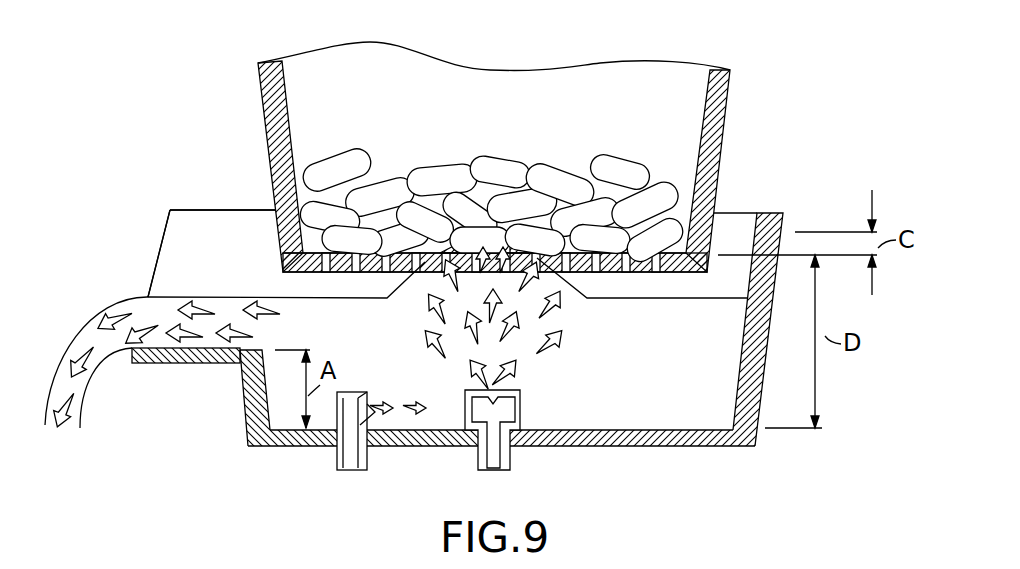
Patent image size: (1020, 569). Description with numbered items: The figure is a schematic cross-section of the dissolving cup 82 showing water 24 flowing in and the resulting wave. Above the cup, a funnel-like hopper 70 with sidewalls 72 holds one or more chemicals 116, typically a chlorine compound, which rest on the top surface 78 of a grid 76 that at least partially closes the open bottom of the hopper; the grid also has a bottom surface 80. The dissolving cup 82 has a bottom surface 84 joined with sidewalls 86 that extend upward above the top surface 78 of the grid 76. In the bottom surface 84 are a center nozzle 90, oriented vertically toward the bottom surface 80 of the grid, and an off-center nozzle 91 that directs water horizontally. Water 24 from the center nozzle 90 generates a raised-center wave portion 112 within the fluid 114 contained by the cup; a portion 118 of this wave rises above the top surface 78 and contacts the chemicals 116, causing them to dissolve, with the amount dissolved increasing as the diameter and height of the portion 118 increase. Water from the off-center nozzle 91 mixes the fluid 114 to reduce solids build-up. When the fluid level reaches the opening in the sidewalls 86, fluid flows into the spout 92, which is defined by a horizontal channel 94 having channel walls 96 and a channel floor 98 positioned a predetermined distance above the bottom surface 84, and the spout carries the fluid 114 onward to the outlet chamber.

The water 24 is at (447, 380).
The hopper 70 is at (630, 73).
The sidewalls 72 is at (287, 93).
The grid 76 is at (700, 178).
The top surface 78 is at (372, 253).
The bottom surface 80 is at (345, 273).
The dissolving cup 82 is at (259, 447).
The bottom surface 84 is at (618, 433).
The sidewalls 86 is at (288, 432).
The center nozzle 90 is at (522, 413).
The off-center nozzle 91 is at (352, 392).
The spout 92 is at (147, 365).
The horizontal channel 94 is at (163, 280).
The channel walls 96 is at (188, 218).
The channel floor 98 is at (203, 347).
The raised-center wave portion 112 is at (558, 185).
The fluid 114 is at (687, 420).
The one or more chemicals 116 is at (352, 168).
The portion 118 is at (468, 163).